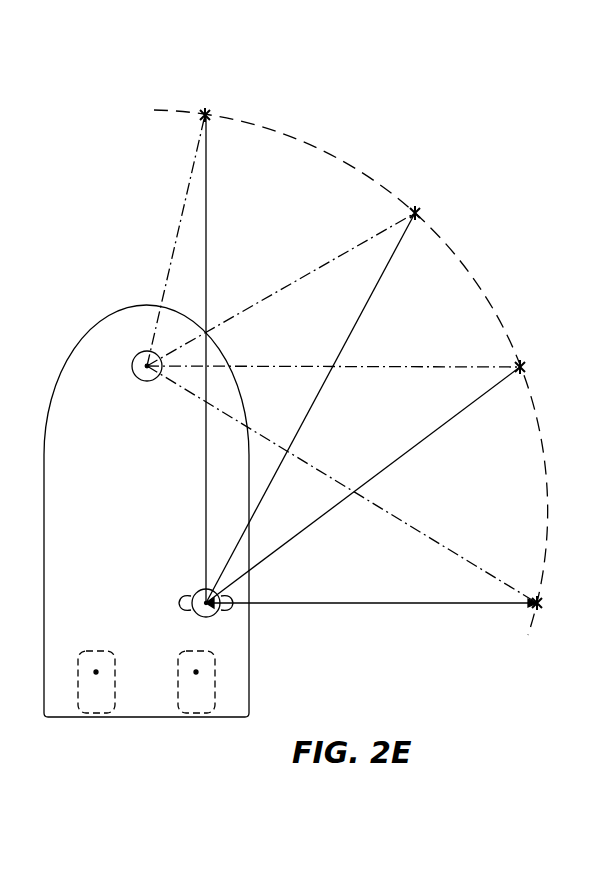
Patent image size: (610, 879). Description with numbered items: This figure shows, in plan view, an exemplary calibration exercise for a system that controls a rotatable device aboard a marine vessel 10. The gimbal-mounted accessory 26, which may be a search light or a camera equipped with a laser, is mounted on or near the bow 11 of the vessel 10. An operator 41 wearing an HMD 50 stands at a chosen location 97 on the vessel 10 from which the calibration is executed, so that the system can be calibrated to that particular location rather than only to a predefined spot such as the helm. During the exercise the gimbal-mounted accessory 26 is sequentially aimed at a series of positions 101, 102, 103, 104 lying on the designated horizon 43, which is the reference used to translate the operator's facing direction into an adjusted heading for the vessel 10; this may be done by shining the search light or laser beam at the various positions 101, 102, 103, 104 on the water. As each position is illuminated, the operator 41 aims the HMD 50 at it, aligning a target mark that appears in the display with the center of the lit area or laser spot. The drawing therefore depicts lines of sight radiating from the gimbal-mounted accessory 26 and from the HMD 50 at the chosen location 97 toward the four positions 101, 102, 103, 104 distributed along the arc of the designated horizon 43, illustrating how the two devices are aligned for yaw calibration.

The marine vessel 10 is at (78, 350).
The bow 11 is at (150, 303).
The gimbal-mounted accessory 26 is at (138, 380).
The operator 41 is at (193, 616).
The designated horizon 43 is at (472, 262).
The HMD 50 is at (200, 590).
The chosen location 97 is at (228, 612).
The position 101 is at (208, 112).
The position 102 is at (418, 210).
The position 103 is at (524, 362).
The position 104 is at (540, 606).